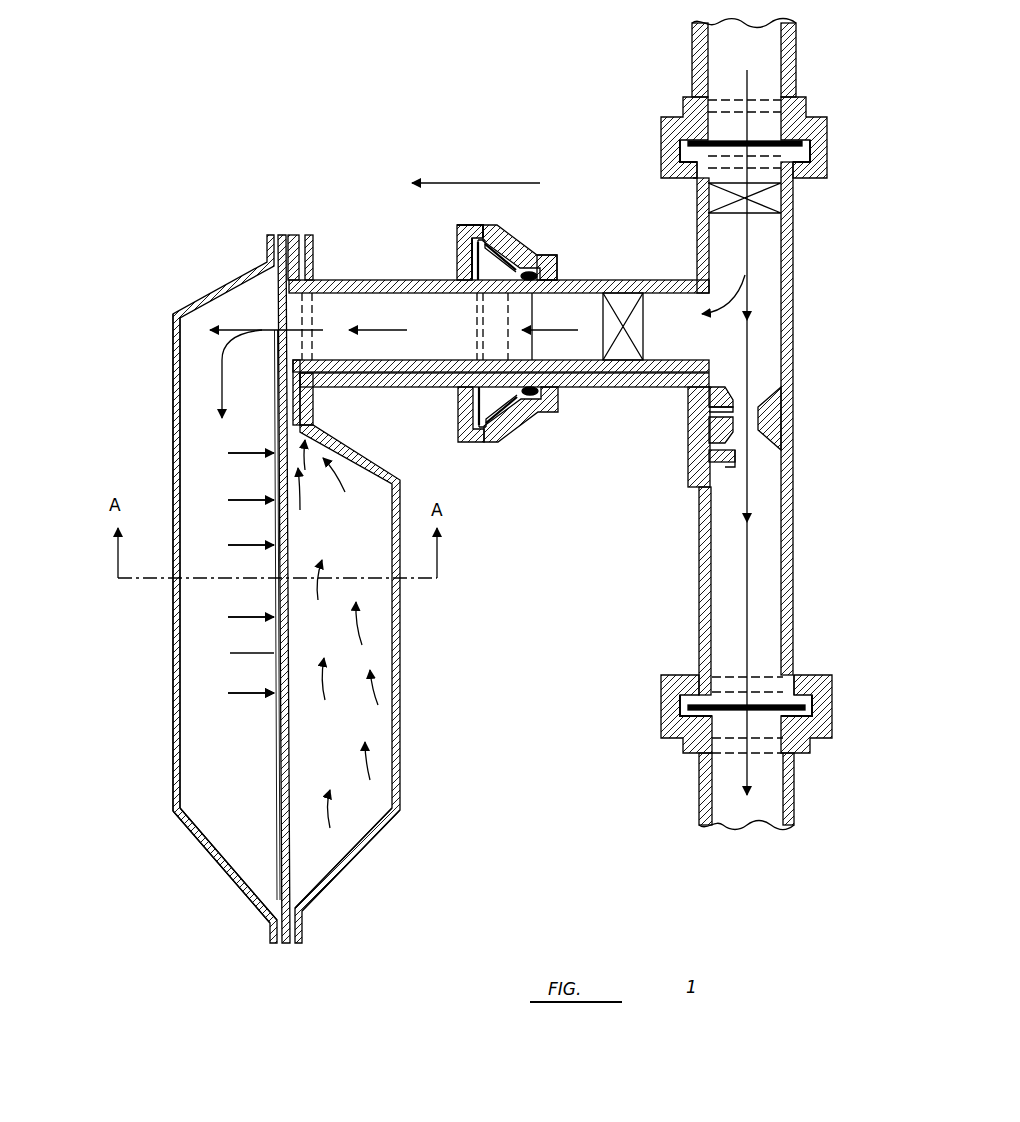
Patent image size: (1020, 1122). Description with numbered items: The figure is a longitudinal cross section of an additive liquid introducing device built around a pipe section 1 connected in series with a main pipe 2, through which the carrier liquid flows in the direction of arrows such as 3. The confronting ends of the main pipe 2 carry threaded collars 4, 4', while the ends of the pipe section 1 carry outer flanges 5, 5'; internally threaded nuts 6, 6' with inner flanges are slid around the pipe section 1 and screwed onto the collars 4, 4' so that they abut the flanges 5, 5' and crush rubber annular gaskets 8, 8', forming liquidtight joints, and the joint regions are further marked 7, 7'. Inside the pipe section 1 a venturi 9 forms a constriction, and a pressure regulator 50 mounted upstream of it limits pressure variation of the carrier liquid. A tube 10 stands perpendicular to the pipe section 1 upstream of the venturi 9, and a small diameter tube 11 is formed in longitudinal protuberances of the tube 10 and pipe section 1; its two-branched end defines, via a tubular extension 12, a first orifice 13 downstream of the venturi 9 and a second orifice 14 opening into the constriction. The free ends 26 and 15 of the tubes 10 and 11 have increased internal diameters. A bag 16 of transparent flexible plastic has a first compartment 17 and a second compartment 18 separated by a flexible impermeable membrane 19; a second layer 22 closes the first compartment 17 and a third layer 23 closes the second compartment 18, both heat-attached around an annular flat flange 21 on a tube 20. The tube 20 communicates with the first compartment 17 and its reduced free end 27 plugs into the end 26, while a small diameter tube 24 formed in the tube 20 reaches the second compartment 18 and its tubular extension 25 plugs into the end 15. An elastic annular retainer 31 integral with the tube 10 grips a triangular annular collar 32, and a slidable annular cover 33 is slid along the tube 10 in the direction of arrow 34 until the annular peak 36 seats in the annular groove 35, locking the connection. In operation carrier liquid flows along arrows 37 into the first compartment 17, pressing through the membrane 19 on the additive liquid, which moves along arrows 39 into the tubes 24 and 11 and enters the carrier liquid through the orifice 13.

The pipe section 1 is at (794, 568).
The main pipe 2 is at (797, 46).
The arrows (carrier liquid flow direction) 3 is at (746, 668).
The threaded collar 4 is at (738, 115).
The threaded collar 4' is at (743, 737).
The outer flange 5 is at (776, 153).
The outer flange 5' is at (784, 691).
The nut 6 is at (658, 146).
The nut 6' is at (666, 704).
The flange 7 is at (761, 191).
The flange 7' is at (812, 659).
The annular gasket 8 is at (827, 141).
The annular gasket 8' is at (823, 722).
The venturi 9 is at (783, 412).
The tube 10 is at (680, 279).
The small diameter tube 11 is at (651, 388).
The tubular extension 12 is at (718, 468).
The first orifice 13 is at (741, 467).
The second orifice 14 is at (722, 392).
The free end of tube 11 15 is at (527, 412).
The bag 16 is at (182, 848).
The first compartment 17 is at (180, 630).
The second compartment 18 is at (332, 880).
The flexible impermeable membrane 19 is at (281, 775).
The tube 20 is at (378, 279).
The annular flat flange 21 is at (295, 234).
The second layer 22 is at (173, 366).
The third layer 23 is at (402, 650).
The small diameter tube 24 is at (389, 376).
The tubular extension 25 is at (530, 385).
The free end of tube 10 26 is at (528, 270).
The free end of tube 20 27 is at (558, 262).
The annular retainer 31 is at (496, 227).
The annular collar 32 is at (481, 445).
The slidable annular cover 33 is at (467, 224).
The arrow 34 is at (470, 180).
The annular groove 35 is at (458, 232).
The annular peak 36 is at (458, 262).
The arrows (carrier liquid flow) 37 is at (375, 300).
The arrows (additive liquid flow) 39 is at (338, 550).
The pressure regulator 50 is at (755, 207).